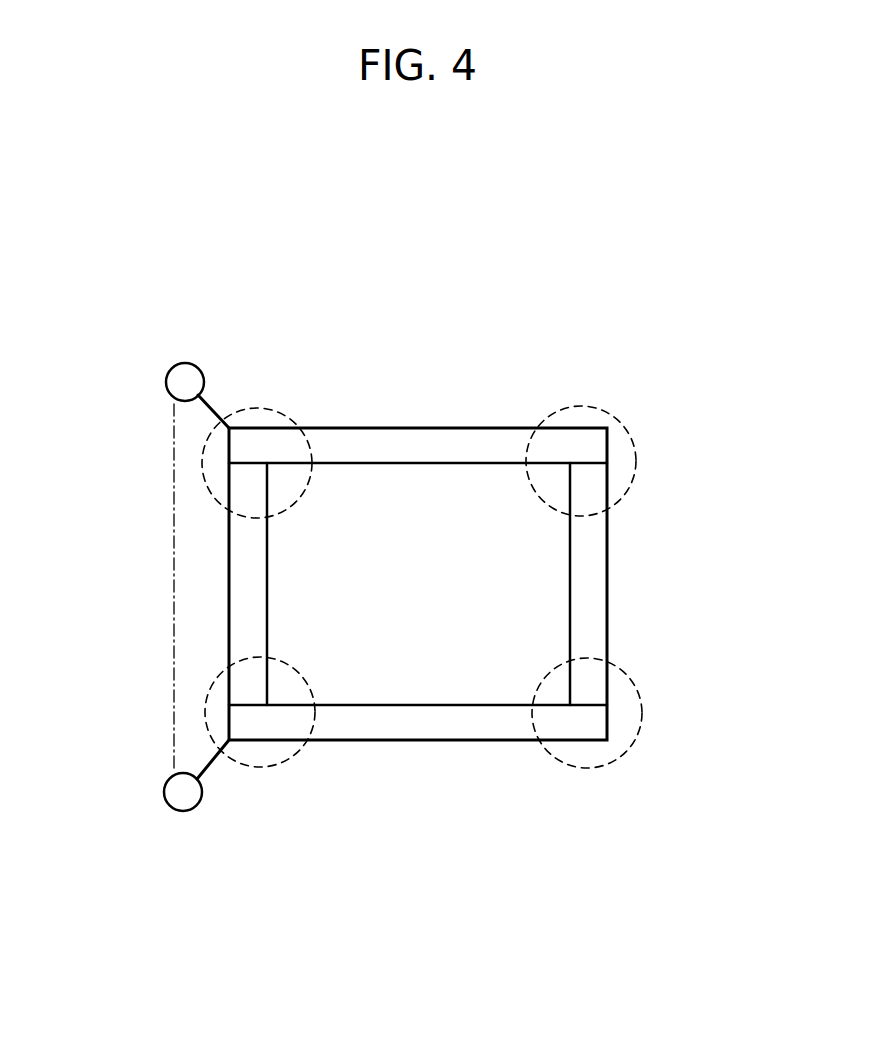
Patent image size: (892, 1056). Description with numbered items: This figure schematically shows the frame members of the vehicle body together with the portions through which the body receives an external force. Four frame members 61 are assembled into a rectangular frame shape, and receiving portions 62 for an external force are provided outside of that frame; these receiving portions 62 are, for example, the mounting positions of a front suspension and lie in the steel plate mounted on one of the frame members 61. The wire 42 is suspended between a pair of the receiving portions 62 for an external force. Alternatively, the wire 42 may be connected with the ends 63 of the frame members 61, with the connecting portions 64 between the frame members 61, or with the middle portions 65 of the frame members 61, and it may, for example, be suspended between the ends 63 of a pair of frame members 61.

The frame member 61 is at (480, 322).
The receiving portion for an external force 62 is at (185, 363).
The end of the frame member 63 is at (272, 410).
The connecting portion between the frame members 64 is at (298, 500).
The middle portion of the frame member 65 is at (427, 428).
The wire 42 is at (174, 523).